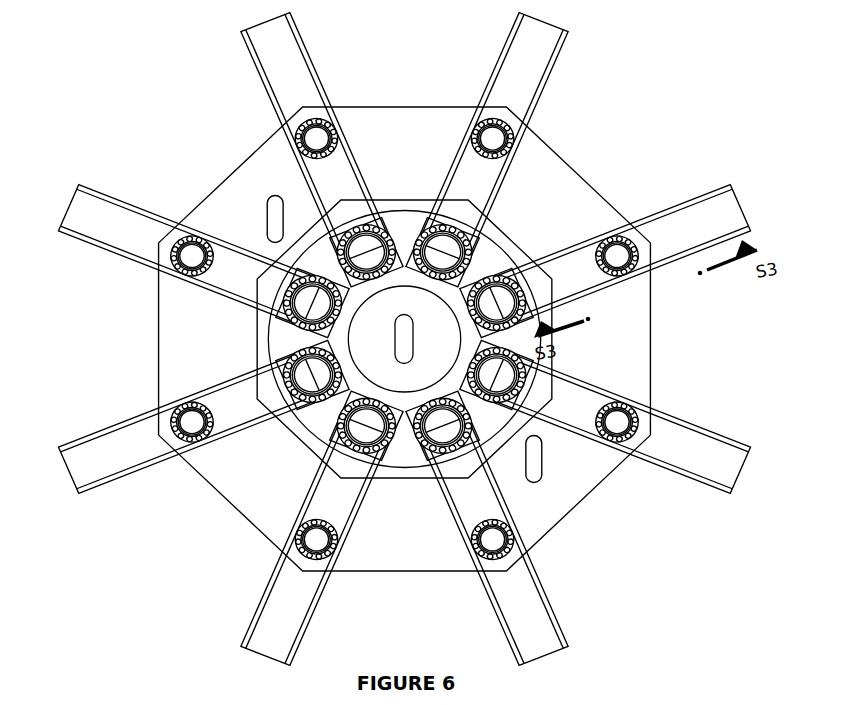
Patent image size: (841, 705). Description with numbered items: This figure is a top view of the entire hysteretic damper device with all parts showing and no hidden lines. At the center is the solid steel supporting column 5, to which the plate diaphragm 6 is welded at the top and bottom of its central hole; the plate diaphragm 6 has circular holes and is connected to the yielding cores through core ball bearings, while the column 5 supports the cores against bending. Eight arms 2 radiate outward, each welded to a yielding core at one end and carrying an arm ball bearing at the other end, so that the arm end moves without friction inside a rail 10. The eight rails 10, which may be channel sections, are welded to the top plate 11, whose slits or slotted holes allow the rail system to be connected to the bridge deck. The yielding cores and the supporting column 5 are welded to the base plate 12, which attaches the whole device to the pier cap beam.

The arm 2 is at (404, 338).
The supporting column 5 is at (360, 325).
The plate diaphragm 6 is at (517, 236).
The rail 10 is at (404, 339).
The top plate 11 is at (405, 104).
The base plate 12 is at (404, 473).